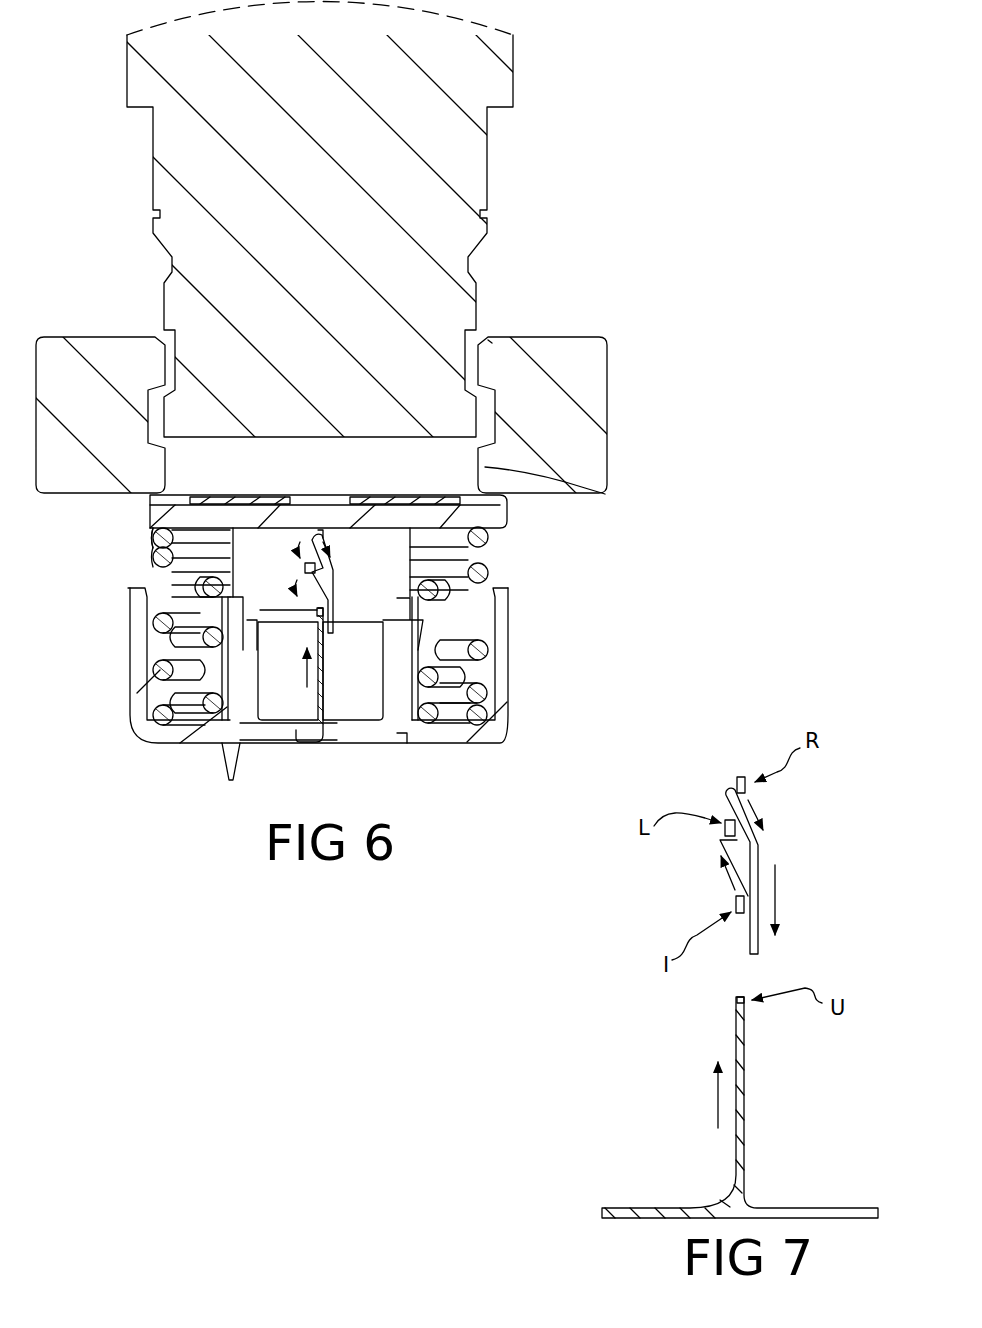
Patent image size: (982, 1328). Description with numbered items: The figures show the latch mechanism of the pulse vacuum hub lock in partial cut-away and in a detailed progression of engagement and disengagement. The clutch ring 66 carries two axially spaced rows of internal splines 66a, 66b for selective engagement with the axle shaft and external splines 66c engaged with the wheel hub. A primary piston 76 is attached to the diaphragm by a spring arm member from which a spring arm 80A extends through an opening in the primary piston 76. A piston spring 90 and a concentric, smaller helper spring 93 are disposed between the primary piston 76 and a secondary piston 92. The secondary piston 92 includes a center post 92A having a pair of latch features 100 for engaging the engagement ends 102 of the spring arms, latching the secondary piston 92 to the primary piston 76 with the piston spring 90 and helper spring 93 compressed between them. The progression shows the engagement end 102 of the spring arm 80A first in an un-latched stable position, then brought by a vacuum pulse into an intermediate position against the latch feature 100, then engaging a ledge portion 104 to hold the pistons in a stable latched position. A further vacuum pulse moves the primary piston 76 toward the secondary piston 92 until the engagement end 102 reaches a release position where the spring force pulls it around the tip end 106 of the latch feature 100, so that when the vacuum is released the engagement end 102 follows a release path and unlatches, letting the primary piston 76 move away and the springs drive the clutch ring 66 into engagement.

In FIG. 6, the clutch ring 66 is at (63, 502).
In FIG. 6, the internal splines 66a is at (605, 494).
In FIG. 6, the internal splines 66b is at (489, 357).
In FIG. 6, the external splines 66c is at (596, 450).
In FIG. 6, the primary piston 76 is at (512, 706).
In FIG. 6, the spring arm 80A is at (316, 700).
In FIG. 7, the spring arm 80A is at (743, 1102).
In FIG. 6, the piston spring 90 is at (490, 650).
In FIG. 6, the secondary piston 92 is at (482, 515).
In FIG. 6, the center post 92A is at (250, 548).
In FIG. 6, the helper spring 93 is at (433, 702).
In FIG. 6, the latch feature 100 is at (340, 588).
In FIG. 7, the latch feature 100 is at (781, 842).
In FIG. 6, the engagement end 102 is at (318, 612).
In FIG. 7, the engagement end 102 is at (738, 777).
In FIG. 7, the ledge portion 104 is at (720, 838).
In FIG. 7, the tip end 106 is at (730, 786).